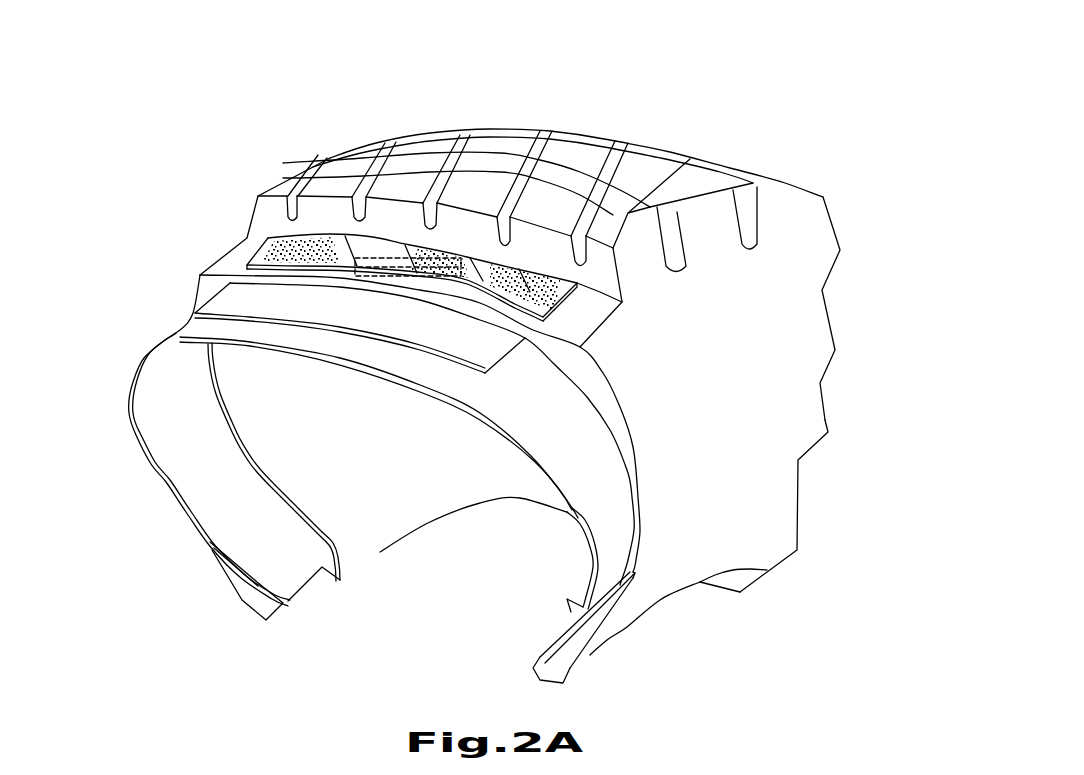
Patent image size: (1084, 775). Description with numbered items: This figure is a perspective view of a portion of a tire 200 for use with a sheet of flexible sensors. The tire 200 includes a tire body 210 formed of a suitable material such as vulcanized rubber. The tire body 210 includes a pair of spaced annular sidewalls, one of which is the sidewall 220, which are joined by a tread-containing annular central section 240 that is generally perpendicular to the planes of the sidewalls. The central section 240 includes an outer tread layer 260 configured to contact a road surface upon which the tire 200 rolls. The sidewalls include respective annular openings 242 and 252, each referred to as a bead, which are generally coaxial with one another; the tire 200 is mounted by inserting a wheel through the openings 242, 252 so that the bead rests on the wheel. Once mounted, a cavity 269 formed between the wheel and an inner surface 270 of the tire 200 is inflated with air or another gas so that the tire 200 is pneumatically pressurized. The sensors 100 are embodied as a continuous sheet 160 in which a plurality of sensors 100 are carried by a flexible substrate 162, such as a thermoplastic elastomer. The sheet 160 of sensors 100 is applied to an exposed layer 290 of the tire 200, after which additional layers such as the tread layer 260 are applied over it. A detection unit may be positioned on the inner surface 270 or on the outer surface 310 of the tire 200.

The sensor 100 is at (532, 283).
The sheet 160 is at (408, 285).
The flexible substrate 162 is at (268, 257).
The tire 200 is at (756, 112).
The tire body 210 is at (797, 290).
The sidewall 220 is at (270, 402).
The central section 240 is at (598, 190).
The annular opening 242 is at (455, 510).
The annular opening 252 is at (545, 654).
The outer tread layer 260 is at (673, 258).
The cavity 269 is at (359, 512).
The inner surface 270 is at (497, 480).
The exposed layer 290 is at (233, 268).
The outer surface 310 is at (763, 457).